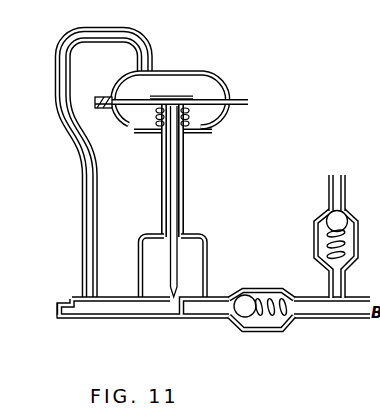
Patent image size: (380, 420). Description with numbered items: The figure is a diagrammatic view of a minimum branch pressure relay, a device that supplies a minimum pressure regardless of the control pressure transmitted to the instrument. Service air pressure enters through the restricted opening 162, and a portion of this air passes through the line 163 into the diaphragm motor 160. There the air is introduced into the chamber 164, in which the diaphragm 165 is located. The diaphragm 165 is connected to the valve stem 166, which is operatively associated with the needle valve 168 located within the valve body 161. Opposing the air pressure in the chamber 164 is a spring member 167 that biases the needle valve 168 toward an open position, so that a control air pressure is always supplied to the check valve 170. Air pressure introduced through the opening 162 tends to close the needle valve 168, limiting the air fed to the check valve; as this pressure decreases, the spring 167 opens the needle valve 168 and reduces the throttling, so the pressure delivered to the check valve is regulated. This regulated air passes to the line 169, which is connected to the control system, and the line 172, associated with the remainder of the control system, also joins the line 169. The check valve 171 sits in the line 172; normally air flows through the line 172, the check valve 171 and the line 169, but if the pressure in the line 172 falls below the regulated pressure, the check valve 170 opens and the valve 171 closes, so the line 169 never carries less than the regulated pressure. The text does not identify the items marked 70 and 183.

The feed tube 70 is at (184, 202).
The diaphragm motor 160 is at (173, 71).
The valve body 161 is at (206, 243).
The restricted opening 162 is at (61, 319).
The line 163 is at (82, 209).
The chamber 164 is at (171, 92).
The diaphragm 165 is at (197, 100).
The valve stem 166 is at (171, 179).
The spring member 167 is at (187, 114).
The needle valve 168 is at (170, 294).
The line 169 is at (350, 321).
The check valve 170 is at (253, 333).
The check valve 171 is at (314, 233).
The line 172 is at (331, 176).
The connecting line 183 is at (379, 162).